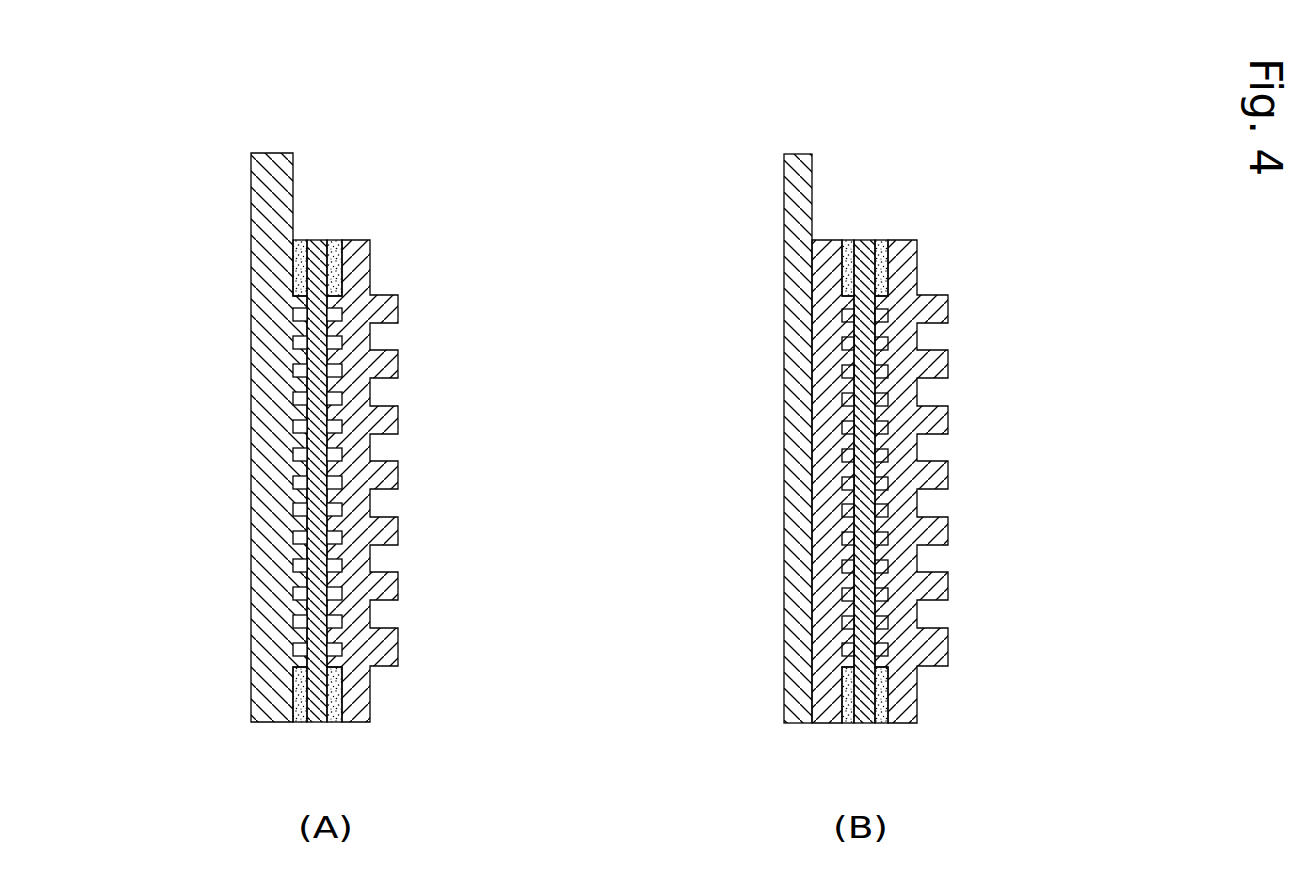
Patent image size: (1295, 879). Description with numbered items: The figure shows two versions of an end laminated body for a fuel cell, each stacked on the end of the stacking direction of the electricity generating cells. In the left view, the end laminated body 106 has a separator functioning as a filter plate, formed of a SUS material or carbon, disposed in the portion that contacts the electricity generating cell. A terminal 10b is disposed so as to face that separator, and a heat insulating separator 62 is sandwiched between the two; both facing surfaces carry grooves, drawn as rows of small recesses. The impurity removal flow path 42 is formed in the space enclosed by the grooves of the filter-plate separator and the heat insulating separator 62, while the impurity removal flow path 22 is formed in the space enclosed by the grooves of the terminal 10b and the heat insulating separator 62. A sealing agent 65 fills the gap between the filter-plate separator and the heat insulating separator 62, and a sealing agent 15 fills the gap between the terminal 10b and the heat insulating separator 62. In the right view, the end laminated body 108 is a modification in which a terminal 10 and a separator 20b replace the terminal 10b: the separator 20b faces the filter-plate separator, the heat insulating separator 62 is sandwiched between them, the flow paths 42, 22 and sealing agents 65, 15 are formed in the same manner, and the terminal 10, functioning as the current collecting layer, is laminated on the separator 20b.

The terminal 10 is at (798, 154).
The terminal 10b is at (262, 153).
The sealing agent 15 is at (300, 723).
The separator 20b is at (826, 250).
The impurity removal flow path 22 is at (300, 316).
The impurity removal flow path 42 is at (338, 342).
The heat insulating separator 62 is at (312, 240).
The sealing agent 65 is at (335, 723).
The end laminated body 106 is at (384, 117).
The end laminated body 108 is at (929, 117).